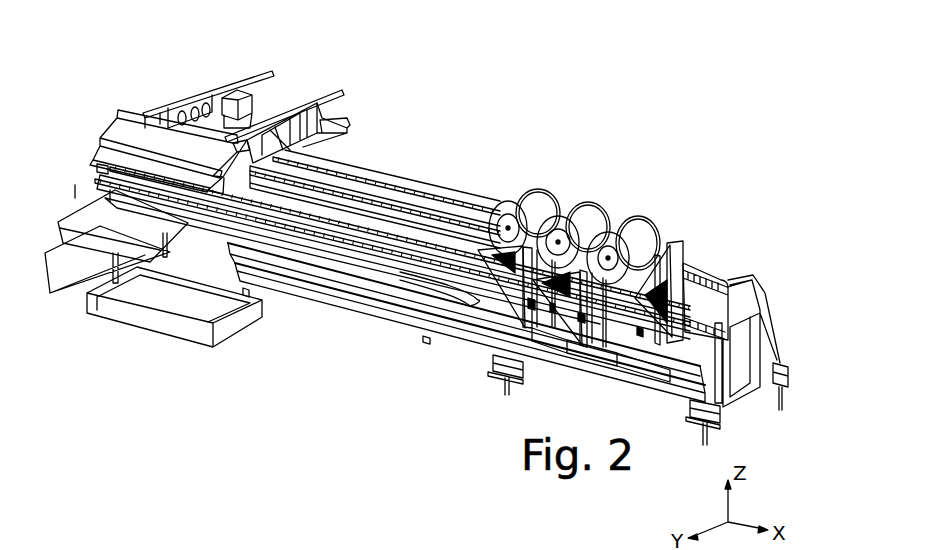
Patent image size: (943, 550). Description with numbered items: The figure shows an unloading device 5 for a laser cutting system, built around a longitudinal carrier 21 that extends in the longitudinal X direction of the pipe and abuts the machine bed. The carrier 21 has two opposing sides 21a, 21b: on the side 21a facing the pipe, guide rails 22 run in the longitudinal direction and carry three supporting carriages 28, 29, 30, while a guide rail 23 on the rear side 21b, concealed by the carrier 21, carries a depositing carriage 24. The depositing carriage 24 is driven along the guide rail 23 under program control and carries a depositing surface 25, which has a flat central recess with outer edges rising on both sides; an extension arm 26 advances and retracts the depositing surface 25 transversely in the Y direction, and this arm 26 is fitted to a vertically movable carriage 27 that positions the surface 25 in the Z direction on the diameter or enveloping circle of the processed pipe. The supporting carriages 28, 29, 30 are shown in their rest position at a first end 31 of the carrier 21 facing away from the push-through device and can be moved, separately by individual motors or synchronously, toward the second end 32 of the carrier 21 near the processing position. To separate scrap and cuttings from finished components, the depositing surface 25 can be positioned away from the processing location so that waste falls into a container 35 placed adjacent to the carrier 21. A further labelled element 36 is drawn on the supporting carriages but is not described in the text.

The unloading device 5 is at (612, 103).
The longitudinal carrier 21 is at (392, 200).
The side of the carrier facing the pipe 21a is at (333, 217).
The rear side of the carrier 21b is at (432, 198).
The guide rails 22 is at (707, 285).
The guide rail 23 is at (692, 251).
The depositing carriage 24 is at (187, 83).
The depositing surface 25 is at (122, 135).
The extension arm 26 is at (293, 110).
The vertically movable carriage 27 is at (237, 128).
The supporting carriage 28 is at (549, 181).
The supporting carriage 29 is at (597, 191).
The supporting carriage 30 is at (647, 211).
The first end of the carrier 31 is at (752, 292).
The second end of the carrier 32 is at (107, 173).
The container 35 is at (238, 323).
The guide disc 36 is at (532, 205).